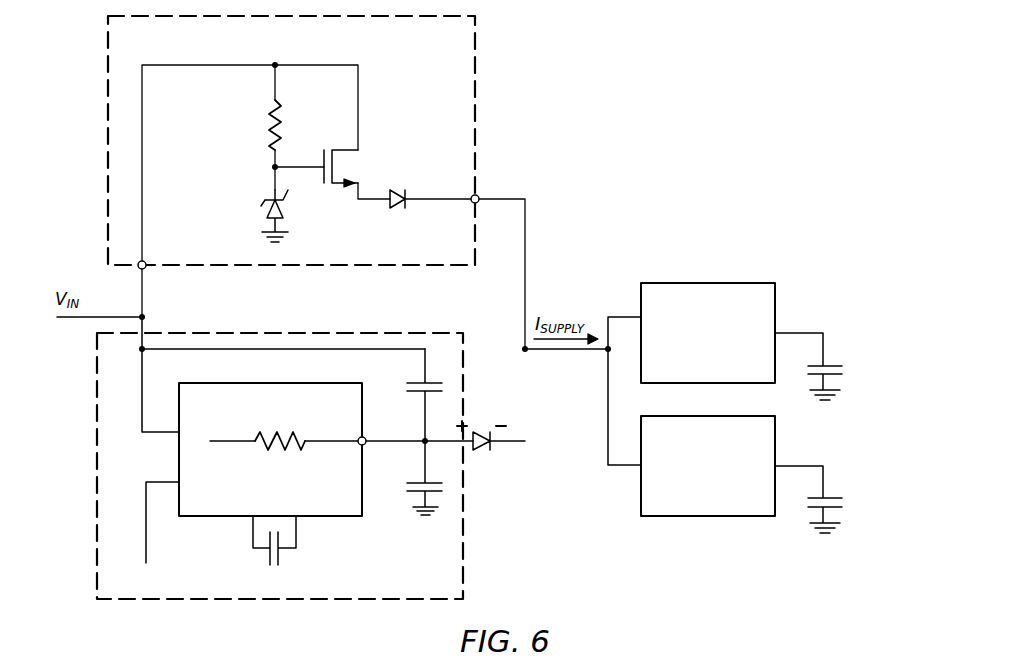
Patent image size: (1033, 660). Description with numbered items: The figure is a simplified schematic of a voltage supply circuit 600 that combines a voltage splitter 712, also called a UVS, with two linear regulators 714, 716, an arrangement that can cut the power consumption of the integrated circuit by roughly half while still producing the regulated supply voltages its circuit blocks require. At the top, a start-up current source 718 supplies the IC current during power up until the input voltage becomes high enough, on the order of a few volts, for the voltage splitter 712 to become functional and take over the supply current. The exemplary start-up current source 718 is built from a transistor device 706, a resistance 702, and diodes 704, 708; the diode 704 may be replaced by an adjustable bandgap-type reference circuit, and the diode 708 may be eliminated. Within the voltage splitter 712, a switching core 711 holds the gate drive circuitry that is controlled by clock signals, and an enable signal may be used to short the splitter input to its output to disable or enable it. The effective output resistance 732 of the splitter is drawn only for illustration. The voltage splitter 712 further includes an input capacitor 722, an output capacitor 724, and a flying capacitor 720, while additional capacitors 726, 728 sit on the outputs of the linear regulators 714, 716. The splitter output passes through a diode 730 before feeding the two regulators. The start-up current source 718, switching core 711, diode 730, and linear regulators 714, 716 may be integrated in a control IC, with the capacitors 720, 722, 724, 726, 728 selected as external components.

The voltage supply circuit 600 is at (678, 90).
The resistance 702 is at (268, 128).
The diode 704 is at (263, 210).
The transistor device 706 is at (334, 166).
The diode 708 is at (397, 210).
The start-up current source 718 is at (470, 259).
The switching core 711 is at (353, 510).
The voltage splitter 712 is at (455, 594).
The linear regulator 714 is at (770, 381).
The linear regulator 716 is at (770, 514).
The flying capacitor 720 is at (280, 558).
The input capacitor 722 is at (432, 381).
The output capacitor 724 is at (437, 492).
The capacitor 726 is at (833, 367).
The capacitor 728 is at (833, 500).
The diode 730 is at (482, 448).
The effective output resistance 732 is at (266, 447).